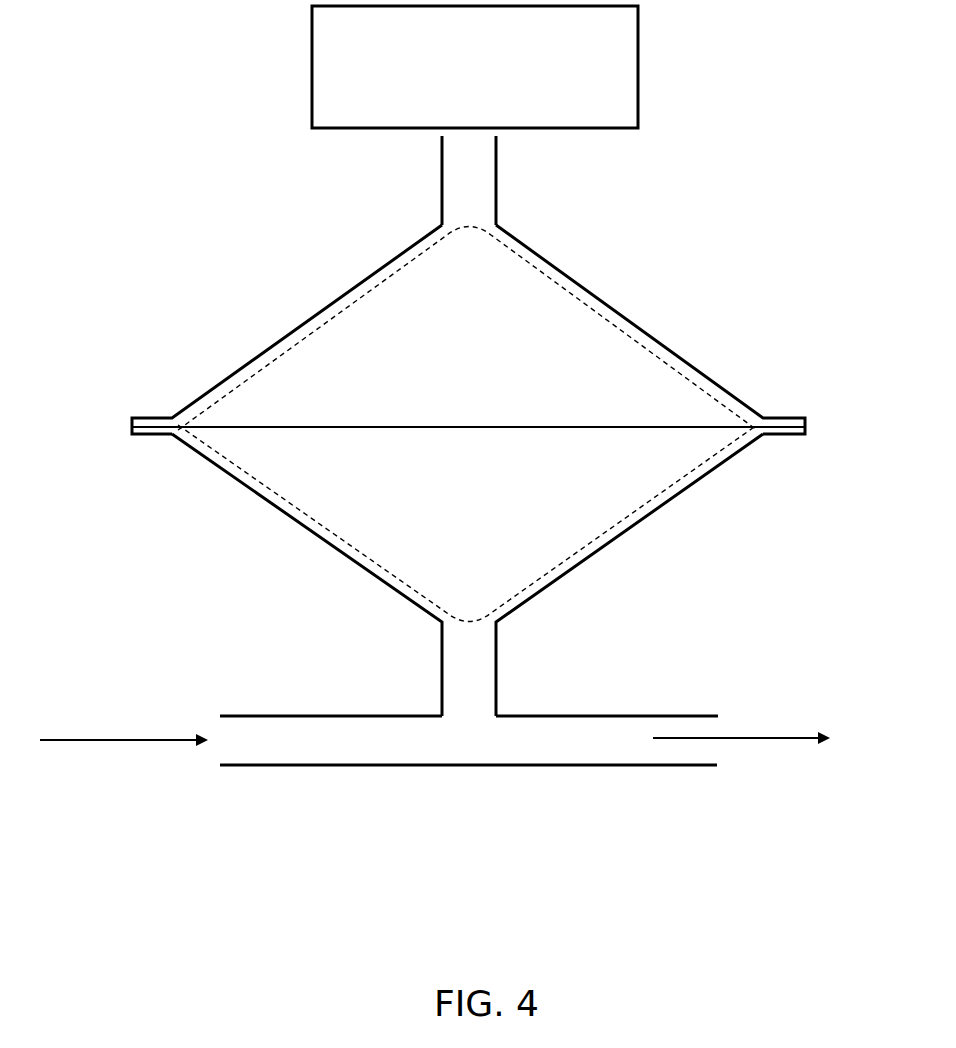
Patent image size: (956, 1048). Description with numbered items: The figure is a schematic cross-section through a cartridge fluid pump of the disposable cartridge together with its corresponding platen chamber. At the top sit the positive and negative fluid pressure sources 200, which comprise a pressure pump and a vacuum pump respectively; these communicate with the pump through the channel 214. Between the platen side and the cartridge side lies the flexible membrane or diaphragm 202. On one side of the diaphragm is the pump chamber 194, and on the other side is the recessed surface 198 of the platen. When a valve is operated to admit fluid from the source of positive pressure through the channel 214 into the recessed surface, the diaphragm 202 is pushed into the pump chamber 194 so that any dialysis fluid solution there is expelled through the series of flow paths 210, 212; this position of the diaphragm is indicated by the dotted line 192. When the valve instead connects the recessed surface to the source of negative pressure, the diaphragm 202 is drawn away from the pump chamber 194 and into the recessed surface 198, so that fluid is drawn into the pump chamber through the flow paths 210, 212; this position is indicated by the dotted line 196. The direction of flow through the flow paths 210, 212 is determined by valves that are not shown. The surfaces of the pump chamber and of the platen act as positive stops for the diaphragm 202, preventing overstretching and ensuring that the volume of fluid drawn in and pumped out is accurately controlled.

The dotted line 192 is at (313, 517).
The pump chamber 194 is at (643, 478).
The dotted line 196 is at (541, 262).
The recessed surface 198 is at (643, 378).
The positive and negative fluid pressure sources 200 is at (475, 67).
The flexible membrane or diaphragm 202 is at (283, 428).
The flow path 210 is at (287, 740).
The flow path 212 is at (603, 742).
The channel 214 is at (468, 183).